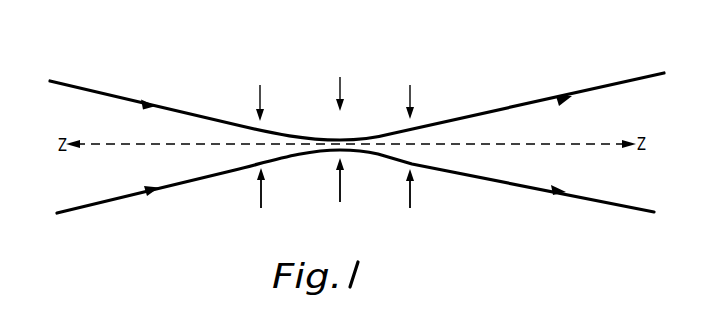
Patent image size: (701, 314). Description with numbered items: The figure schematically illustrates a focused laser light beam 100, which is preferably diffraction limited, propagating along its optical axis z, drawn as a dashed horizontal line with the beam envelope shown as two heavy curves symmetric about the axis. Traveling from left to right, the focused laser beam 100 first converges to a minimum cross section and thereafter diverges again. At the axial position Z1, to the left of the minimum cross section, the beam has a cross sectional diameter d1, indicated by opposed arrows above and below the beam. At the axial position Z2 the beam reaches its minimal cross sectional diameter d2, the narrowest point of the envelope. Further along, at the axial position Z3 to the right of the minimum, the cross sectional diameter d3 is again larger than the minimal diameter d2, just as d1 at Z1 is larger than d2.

The focused laser beam 100 is at (357, 120).
The cross sectional diameter d1 is at (259, 146).
The minimal cross sectional diameter d2 is at (344, 139).
The cross sectional diameter d3 is at (414, 146).
The axial position Z1 is at (259, 207).
The axial position Z2 is at (350, 202).
The axial position Z3 is at (414, 208).